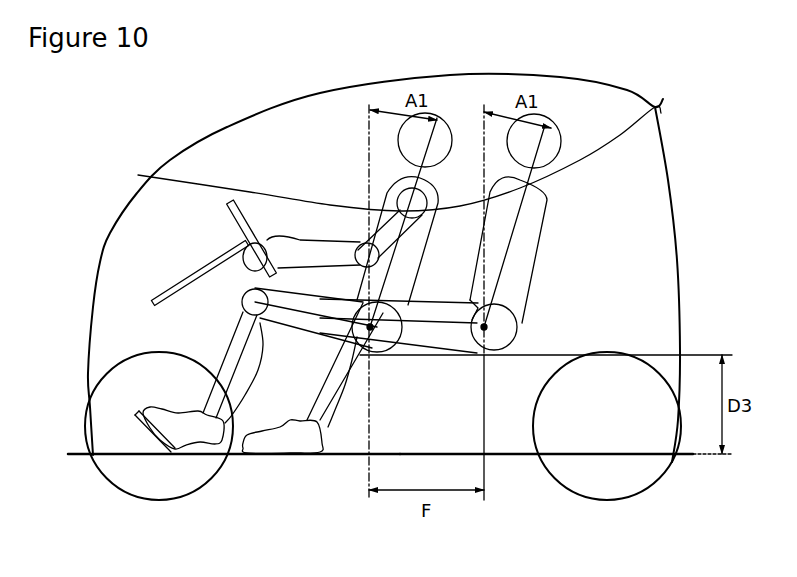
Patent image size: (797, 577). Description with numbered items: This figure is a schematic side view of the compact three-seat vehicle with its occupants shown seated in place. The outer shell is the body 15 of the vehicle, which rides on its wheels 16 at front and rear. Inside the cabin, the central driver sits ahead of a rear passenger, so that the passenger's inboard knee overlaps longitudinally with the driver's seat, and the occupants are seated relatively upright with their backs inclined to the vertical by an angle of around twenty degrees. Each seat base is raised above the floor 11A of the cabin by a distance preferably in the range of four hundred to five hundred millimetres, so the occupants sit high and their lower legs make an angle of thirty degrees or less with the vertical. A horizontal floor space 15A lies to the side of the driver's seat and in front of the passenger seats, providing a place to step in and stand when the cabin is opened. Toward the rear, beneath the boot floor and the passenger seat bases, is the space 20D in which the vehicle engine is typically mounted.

The body 15 is at (680, 313).
The wheels 16 is at (103, 478).
The horizontal floor space 15A is at (338, 455).
The floor 11A is at (518, 453).
The space 20D is at (518, 380).